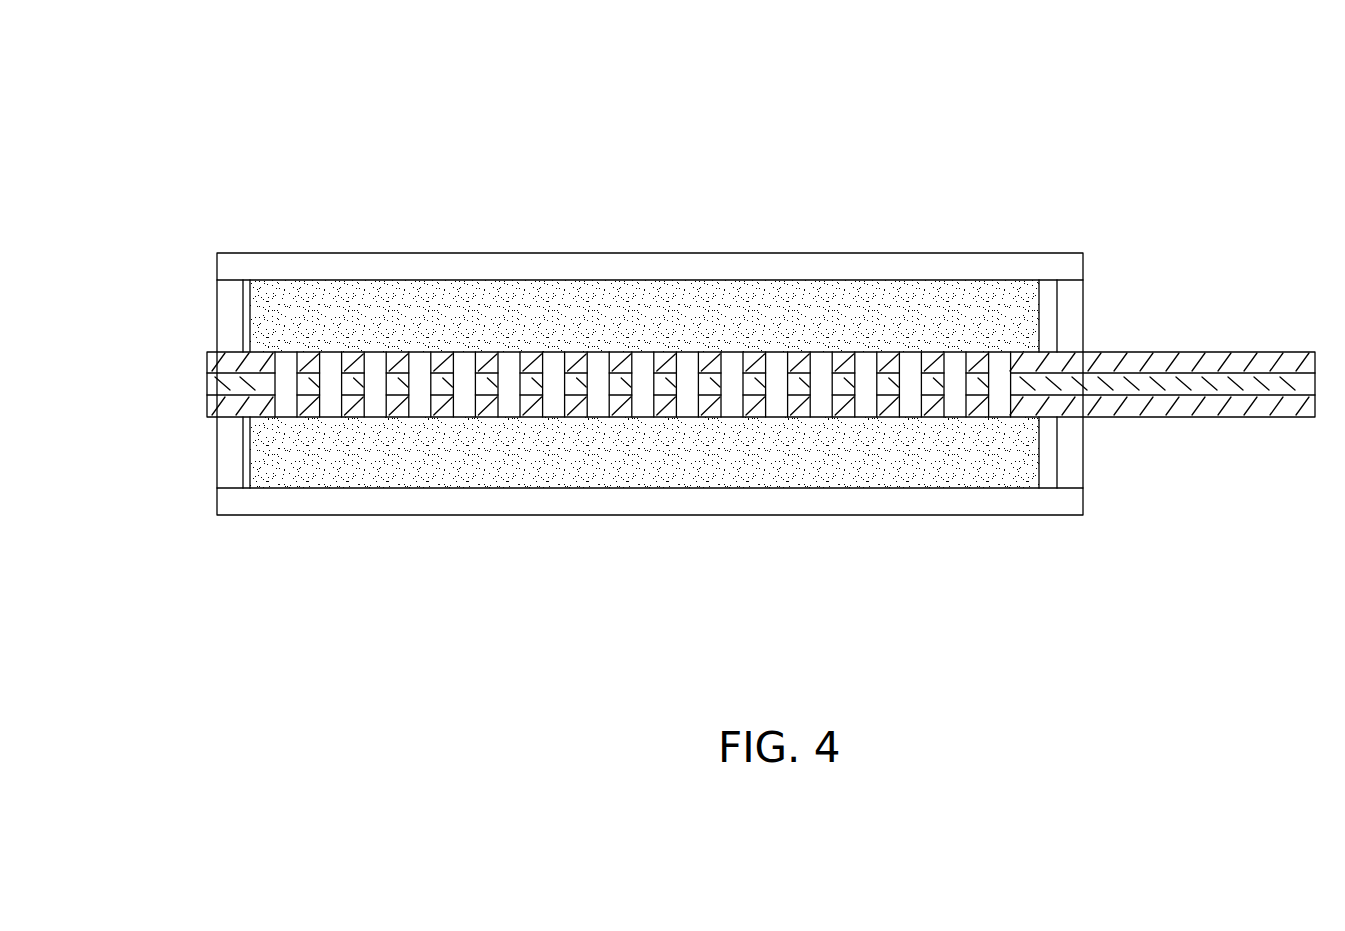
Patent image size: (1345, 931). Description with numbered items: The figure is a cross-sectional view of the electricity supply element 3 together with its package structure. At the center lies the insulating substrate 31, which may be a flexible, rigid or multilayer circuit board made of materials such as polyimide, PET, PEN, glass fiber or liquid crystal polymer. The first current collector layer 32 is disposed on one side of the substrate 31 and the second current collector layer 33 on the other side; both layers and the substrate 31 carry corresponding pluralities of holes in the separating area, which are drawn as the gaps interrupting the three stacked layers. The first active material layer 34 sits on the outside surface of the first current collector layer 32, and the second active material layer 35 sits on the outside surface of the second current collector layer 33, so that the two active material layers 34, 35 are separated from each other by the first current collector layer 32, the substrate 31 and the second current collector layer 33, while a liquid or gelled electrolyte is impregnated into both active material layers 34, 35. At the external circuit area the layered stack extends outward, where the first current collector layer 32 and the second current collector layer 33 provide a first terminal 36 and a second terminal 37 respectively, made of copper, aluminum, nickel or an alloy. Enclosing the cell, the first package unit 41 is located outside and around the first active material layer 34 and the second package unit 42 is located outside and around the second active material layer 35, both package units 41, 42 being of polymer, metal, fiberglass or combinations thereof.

The electricity supply element 3 is at (242, 128).
The substrate 31 is at (207, 383).
The first current collector layer 32 is at (212, 362).
The second current collector layer 33 is at (210, 407).
The first active material layer 34 is at (253, 319).
The second active material layer 35 is at (355, 476).
The first terminal 36 is at (1272, 350).
The second terminal 37 is at (1258, 415).
The first package unit 41 is at (697, 252).
The second package unit 42 is at (585, 516).